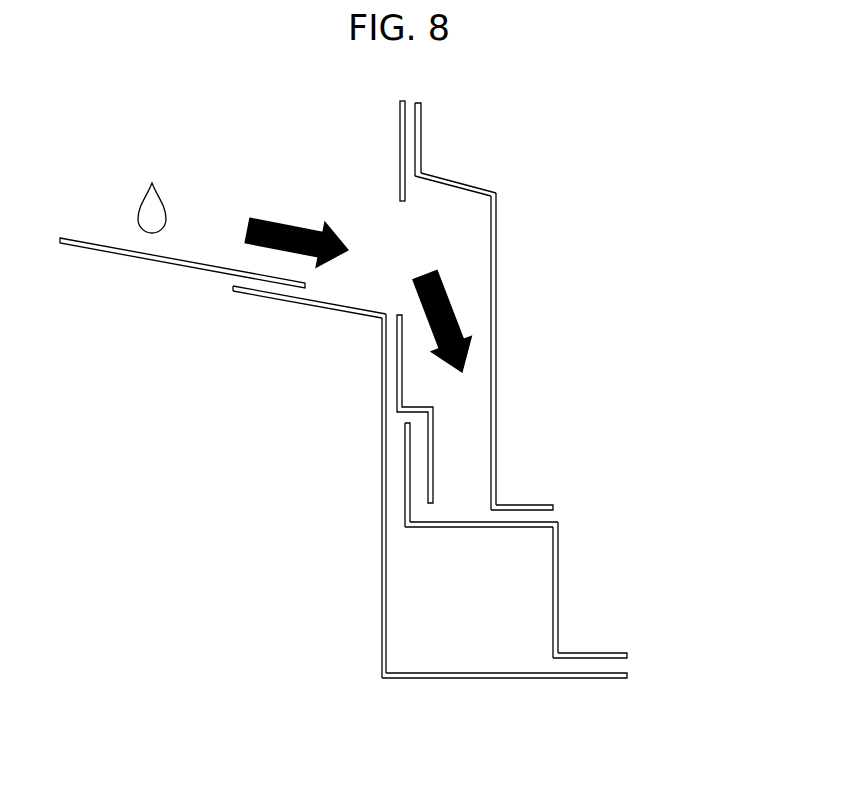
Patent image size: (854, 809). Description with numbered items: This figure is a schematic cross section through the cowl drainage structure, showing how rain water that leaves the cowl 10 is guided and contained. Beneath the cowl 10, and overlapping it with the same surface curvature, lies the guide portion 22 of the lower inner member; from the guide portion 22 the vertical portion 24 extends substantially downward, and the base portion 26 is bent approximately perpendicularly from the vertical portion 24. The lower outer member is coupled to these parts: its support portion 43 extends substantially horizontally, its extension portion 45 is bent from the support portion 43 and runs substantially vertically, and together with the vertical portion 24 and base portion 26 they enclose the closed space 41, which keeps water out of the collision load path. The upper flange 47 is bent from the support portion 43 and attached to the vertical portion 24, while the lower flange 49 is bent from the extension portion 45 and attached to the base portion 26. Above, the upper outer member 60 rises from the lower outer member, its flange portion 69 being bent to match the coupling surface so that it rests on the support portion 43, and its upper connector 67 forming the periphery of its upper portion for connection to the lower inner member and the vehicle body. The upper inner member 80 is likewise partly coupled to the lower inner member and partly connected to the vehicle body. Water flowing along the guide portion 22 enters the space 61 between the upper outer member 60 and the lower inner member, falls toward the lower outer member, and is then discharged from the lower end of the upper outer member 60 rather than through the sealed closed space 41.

The cowl 10 is at (137, 257).
The guide portion 22 is at (275, 298).
The vertical portion 24 is at (382, 608).
The base portion 26 is at (428, 678).
The closed space 41 is at (477, 606).
The support portion 43 is at (505, 525).
The extension portion 45 is at (558, 585).
The upper flange 47 is at (408, 473).
The lower flange 49 is at (597, 653).
The upper outer member 60 is at (496, 287).
The space 61 is at (447, 232).
The upper connector 67 is at (421, 140).
The flange portion 69 is at (522, 508).
The upper inner member 80 is at (400, 135).